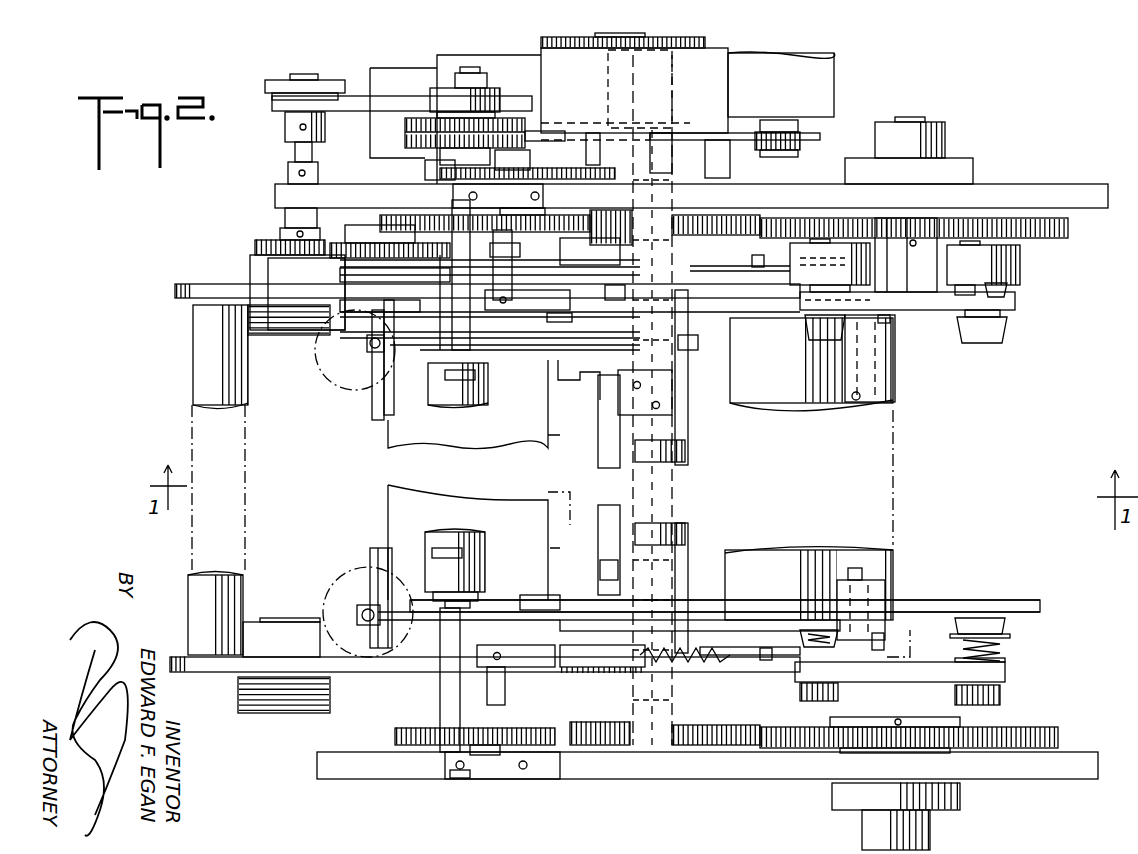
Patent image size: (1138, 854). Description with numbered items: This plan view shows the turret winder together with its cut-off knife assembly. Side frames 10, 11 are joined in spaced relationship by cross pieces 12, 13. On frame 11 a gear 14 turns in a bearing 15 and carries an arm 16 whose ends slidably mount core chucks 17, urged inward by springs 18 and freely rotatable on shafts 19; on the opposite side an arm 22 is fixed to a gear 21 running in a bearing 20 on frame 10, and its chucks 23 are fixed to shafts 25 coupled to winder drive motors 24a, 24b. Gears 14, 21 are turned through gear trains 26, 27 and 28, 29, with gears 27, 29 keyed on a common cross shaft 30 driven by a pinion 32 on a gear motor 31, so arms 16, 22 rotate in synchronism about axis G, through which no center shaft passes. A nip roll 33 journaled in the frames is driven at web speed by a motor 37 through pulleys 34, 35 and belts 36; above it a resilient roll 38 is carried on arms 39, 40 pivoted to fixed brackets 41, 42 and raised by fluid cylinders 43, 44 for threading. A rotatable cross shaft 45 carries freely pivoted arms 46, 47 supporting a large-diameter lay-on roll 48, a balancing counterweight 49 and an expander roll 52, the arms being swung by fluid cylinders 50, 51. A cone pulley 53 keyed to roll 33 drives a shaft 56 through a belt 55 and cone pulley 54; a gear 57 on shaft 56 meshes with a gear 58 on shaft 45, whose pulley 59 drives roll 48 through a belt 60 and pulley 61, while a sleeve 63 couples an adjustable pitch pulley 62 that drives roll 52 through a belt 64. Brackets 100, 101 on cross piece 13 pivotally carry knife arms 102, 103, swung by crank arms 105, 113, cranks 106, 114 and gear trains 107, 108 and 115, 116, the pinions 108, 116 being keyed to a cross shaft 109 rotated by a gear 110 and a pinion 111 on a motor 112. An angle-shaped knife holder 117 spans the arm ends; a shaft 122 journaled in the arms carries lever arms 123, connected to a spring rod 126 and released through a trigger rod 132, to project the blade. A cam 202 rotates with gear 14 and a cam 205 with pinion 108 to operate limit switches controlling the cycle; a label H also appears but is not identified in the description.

The side frame 10 is at (1032, 192).
The side frame 11 is at (1053, 780).
The cross piece 12 is at (486, 480).
The cross piece 13 is at (680, 451).
The gear 14 is at (805, 749).
The bearing 15 is at (962, 811).
The arm 16 is at (930, 662).
The core chuck 17 is at (806, 630).
The spring 18 is at (1000, 653).
The shaft 19 is at (815, 703).
The bearing 20 is at (960, 146).
The gear 21 is at (822, 224).
The arm 22 is at (948, 312).
The chuck 23 is at (1008, 341).
The winder drive motor 24a is at (1018, 263).
The winder drive motor 24b is at (800, 263).
The shaft 25 is at (1010, 287).
The gear 26 is at (700, 753).
The gear 27 is at (598, 753).
The gear 28 is at (718, 208).
The gear 29 is at (628, 222).
The cross shaft 30 is at (613, 516).
The gear motor 31 is at (478, 67).
The pinion 32 is at (626, 50).
The roll 33 is at (470, 396).
The pulley 34 is at (510, 124).
The pulley 35 is at (786, 158).
The belt 36 is at (703, 146).
The motor 37 is at (834, 70).
The resilient roll 38 is at (470, 381).
The arm 39 is at (505, 609).
The arm 40 is at (394, 401).
The fixed bracket 41 is at (528, 600).
The fixed bracket 42 is at (562, 381).
The fluid cylinder 43 is at (335, 606).
The fluid cylinder 44 is at (330, 375).
The cross shaft 45 is at (372, 411).
The arm 46 is at (212, 675).
The arm 47 is at (222, 297).
The lay-on roll 48 is at (790, 406).
The counterweight 49 is at (205, 381).
The fluid cylinder 50 is at (280, 714).
The fluid cylinder 51 is at (288, 336).
The expander roll 52 is at (690, 423).
The cone pulley 53 is at (494, 89).
The cone pulley 54 is at (335, 81).
The belt 55 is at (376, 106).
The shaft 56 is at (296, 153).
The gear 57 is at (266, 240).
The gear 58 is at (362, 248).
The pulley 59 is at (345, 273).
The belt 60 is at (590, 273).
The pulley 61 is at (752, 262).
The adjustable pitch pulley 62 is at (352, 350).
The sleeve 63 is at (400, 289).
The belt 64 is at (445, 333).
The bracket 100 is at (600, 561).
The bracket 101 is at (598, 402).
The knife arm 102 is at (752, 622).
The knife arm 103 is at (693, 352).
The crank arm 105 is at (590, 661).
The crank 106 is at (518, 658).
The gear 107 is at (412, 741).
The pinion 108 is at (490, 759).
The cross shaft 109 is at (511, 256).
The gear 110 is at (445, 173).
The pinion 111 is at (595, 165).
The motor 112 is at (722, 77).
The crank arm 113 is at (577, 313).
The crank 114 is at (541, 309).
The gear 115 is at (462, 222).
The pinion 116 is at (526, 224).
The knife holder 117 is at (878, 373).
The shaft 122 is at (855, 413).
The lever arm 123 is at (890, 318).
The spring rod 126 is at (730, 680).
The trigger rod 132 is at (766, 683).
The cam 202 is at (893, 754).
The cam 205 is at (460, 769).
The rotational axis G is at (910, 121).
The shaft H is at (480, 698).